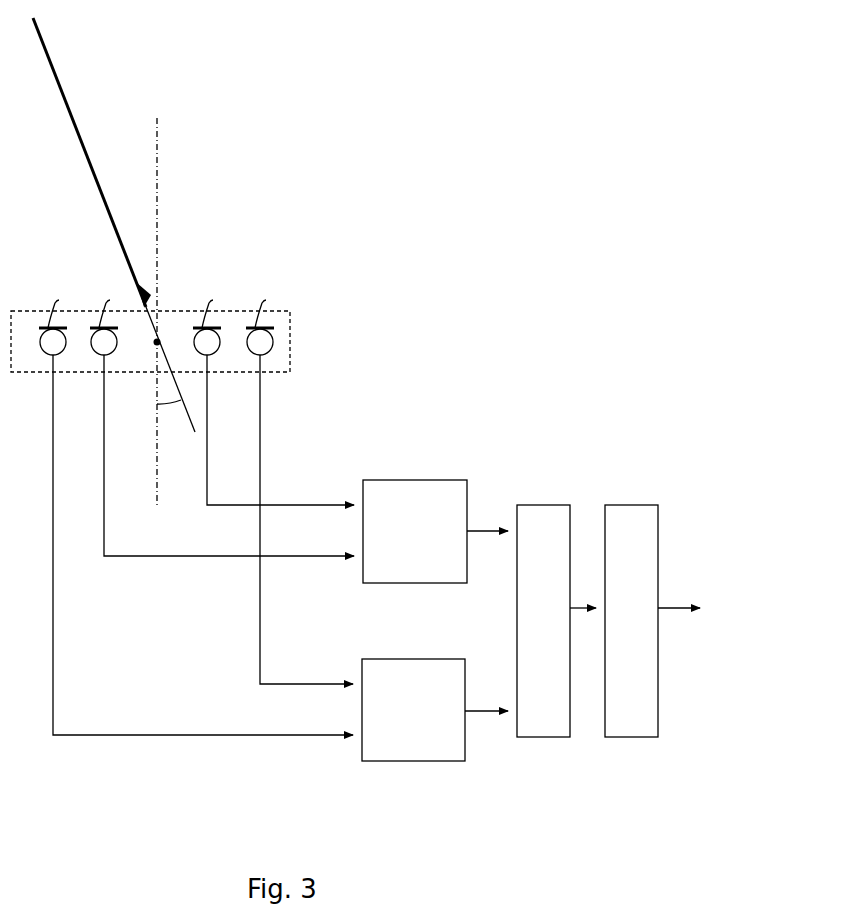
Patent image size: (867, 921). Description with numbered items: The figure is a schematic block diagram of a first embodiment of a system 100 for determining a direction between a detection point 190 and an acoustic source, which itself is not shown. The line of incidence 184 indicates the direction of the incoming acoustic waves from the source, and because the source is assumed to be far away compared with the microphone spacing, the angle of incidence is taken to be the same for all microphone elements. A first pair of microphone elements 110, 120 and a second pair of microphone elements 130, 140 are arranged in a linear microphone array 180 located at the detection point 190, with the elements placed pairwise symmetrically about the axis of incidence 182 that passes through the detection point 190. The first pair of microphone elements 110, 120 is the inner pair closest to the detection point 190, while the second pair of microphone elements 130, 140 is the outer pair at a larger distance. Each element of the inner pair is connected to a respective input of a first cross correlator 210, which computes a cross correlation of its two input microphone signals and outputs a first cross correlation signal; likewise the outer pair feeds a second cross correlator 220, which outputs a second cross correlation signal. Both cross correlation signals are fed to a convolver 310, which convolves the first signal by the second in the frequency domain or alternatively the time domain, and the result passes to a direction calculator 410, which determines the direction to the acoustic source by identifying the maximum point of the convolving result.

The system 100 is at (470, 348).
The microphone element 110 is at (222, 416).
The microphone element 120 is at (273, 391).
The microphone element 130 is at (196, 506).
The microphone element 140 is at (299, 480).
The linear microphone array 180 is at (290, 333).
The axis of incidence 182 is at (158, 180).
The line of incidence 184 is at (70, 112).
The detection point 190 is at (157, 338).
The first cross correlator 210 is at (435, 531).
The second cross correlator 220 is at (435, 710).
The convolver 310 is at (556, 621).
The direction calculator 410 is at (652, 621).